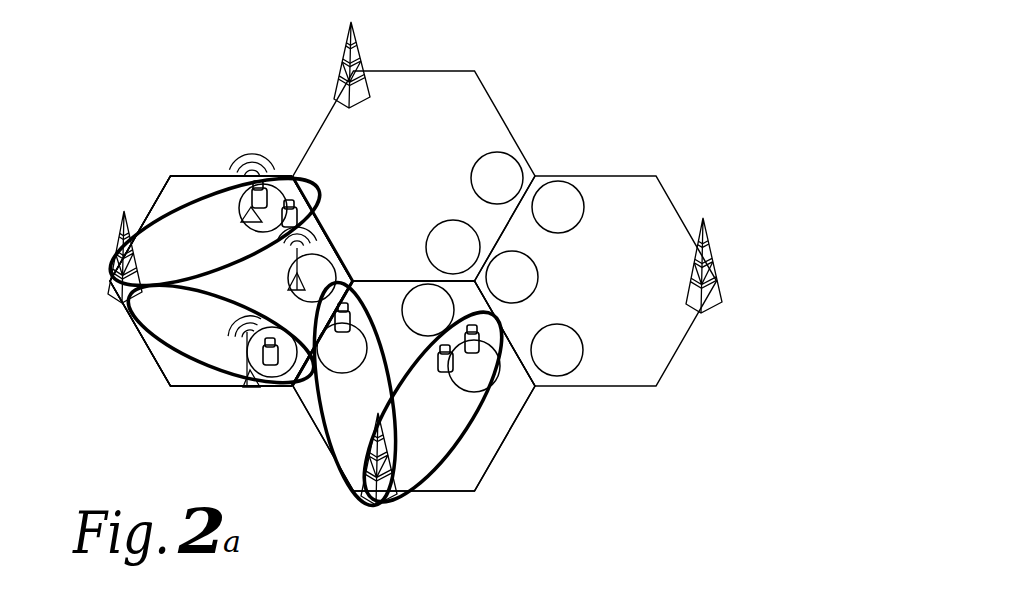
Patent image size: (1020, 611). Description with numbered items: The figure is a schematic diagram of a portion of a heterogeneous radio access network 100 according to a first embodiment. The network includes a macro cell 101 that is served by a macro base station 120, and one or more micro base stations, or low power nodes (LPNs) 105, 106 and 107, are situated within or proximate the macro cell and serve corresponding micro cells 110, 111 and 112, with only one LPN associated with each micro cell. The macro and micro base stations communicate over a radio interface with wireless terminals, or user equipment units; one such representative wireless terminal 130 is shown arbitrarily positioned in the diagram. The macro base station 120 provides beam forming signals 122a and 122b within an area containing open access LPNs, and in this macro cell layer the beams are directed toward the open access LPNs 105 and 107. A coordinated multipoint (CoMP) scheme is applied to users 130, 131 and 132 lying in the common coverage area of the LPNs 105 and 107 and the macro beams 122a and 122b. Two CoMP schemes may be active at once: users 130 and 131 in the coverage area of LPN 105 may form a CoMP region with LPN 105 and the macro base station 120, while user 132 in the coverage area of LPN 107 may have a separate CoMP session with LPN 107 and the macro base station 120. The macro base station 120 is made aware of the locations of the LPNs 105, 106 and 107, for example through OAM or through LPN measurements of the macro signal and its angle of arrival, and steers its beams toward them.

The heterogeneous radio access network 100 is at (550, 138).
The macro cell 101 is at (185, 175).
The low power node 105 is at (247, 222).
The low power node 106 is at (290, 287).
The low power node 107 is at (253, 387).
The micro cell 110 is at (293, 176).
The micro cell 111 is at (325, 248).
The micro cell 112 is at (170, 386).
The macro base station 120 is at (128, 320).
The beam forming signal 122a is at (170, 215).
The beam forming signal 122b is at (147, 345).
The wireless terminal 130 is at (280, 182).
The user 131 is at (303, 217).
The user 132 is at (267, 380).